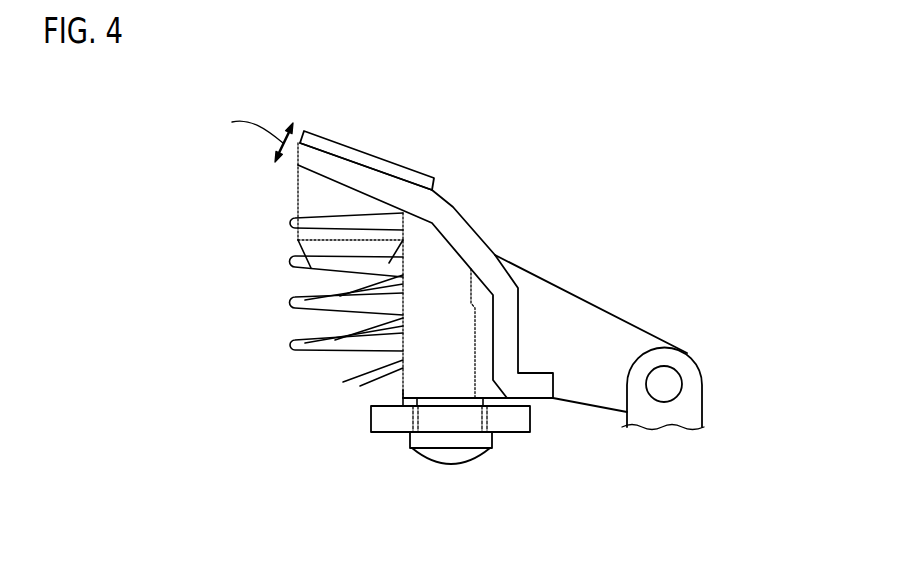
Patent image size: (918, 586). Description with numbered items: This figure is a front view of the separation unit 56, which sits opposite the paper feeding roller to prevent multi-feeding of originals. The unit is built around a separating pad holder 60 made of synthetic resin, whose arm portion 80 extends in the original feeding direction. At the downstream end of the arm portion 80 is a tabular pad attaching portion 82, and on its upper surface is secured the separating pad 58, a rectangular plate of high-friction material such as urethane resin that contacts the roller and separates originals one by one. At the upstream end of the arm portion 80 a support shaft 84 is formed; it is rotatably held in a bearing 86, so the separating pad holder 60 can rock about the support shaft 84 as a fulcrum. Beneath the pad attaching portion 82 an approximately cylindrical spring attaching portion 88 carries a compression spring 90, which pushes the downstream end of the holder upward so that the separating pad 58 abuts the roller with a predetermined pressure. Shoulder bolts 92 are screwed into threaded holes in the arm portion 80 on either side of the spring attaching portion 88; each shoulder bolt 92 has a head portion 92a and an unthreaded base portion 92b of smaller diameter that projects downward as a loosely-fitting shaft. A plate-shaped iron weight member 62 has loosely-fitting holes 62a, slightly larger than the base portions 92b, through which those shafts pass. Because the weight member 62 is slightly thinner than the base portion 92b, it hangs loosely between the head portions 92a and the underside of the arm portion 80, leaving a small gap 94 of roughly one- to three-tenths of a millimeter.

The separation unit 56 is at (309, 71).
The separating pad 58 is at (402, 175).
The separating pad holder 60 is at (497, 254).
The weight member 62 is at (390, 425).
The loosely-fitting hole 62a is at (488, 420).
The arm portion 80 is at (572, 312).
The pad attaching portion 82 is at (343, 178).
The support shaft 84 is at (667, 380).
The bearing 86 is at (683, 408).
The spring attaching portion 88 is at (295, 197).
The compression spring 90 is at (292, 300).
The shoulder bolt 92 is at (470, 460).
The head portion 92a is at (442, 443).
The base portion 92b is at (437, 414).
The gap 94 is at (402, 403).